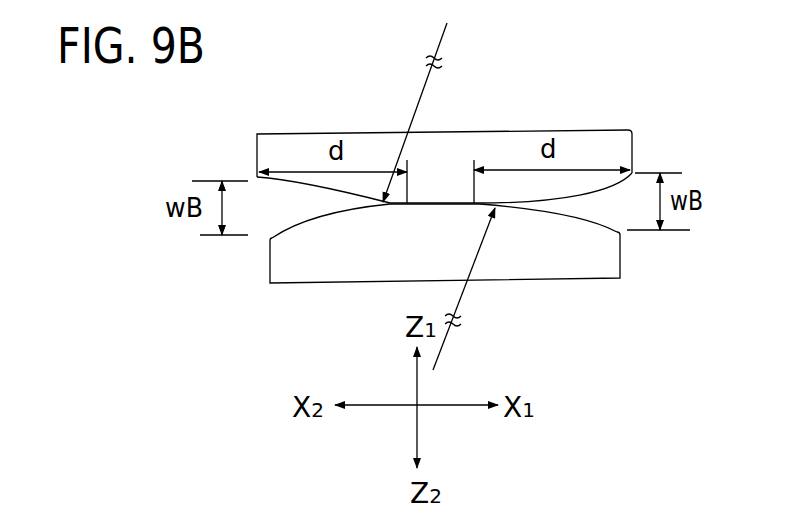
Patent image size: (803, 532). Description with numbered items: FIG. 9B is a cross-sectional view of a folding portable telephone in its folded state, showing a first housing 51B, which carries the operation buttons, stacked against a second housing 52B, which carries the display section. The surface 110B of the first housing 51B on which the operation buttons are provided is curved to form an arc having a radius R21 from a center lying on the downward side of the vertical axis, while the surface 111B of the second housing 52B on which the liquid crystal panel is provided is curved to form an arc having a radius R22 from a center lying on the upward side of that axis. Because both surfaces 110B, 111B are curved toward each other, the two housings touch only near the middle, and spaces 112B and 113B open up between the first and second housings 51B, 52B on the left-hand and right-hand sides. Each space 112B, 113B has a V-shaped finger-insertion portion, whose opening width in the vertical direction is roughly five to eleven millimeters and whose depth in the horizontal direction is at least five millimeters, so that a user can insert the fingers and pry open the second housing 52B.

The first housing 51B is at (372, 270).
The second housing 52B is at (513, 143).
The surface 110B is at (312, 220).
The surface 111B is at (573, 190).
The space 112B is at (285, 209).
The space 113B is at (603, 202).
The radius R21 is at (467, 292).
The radius R22 is at (408, 115).